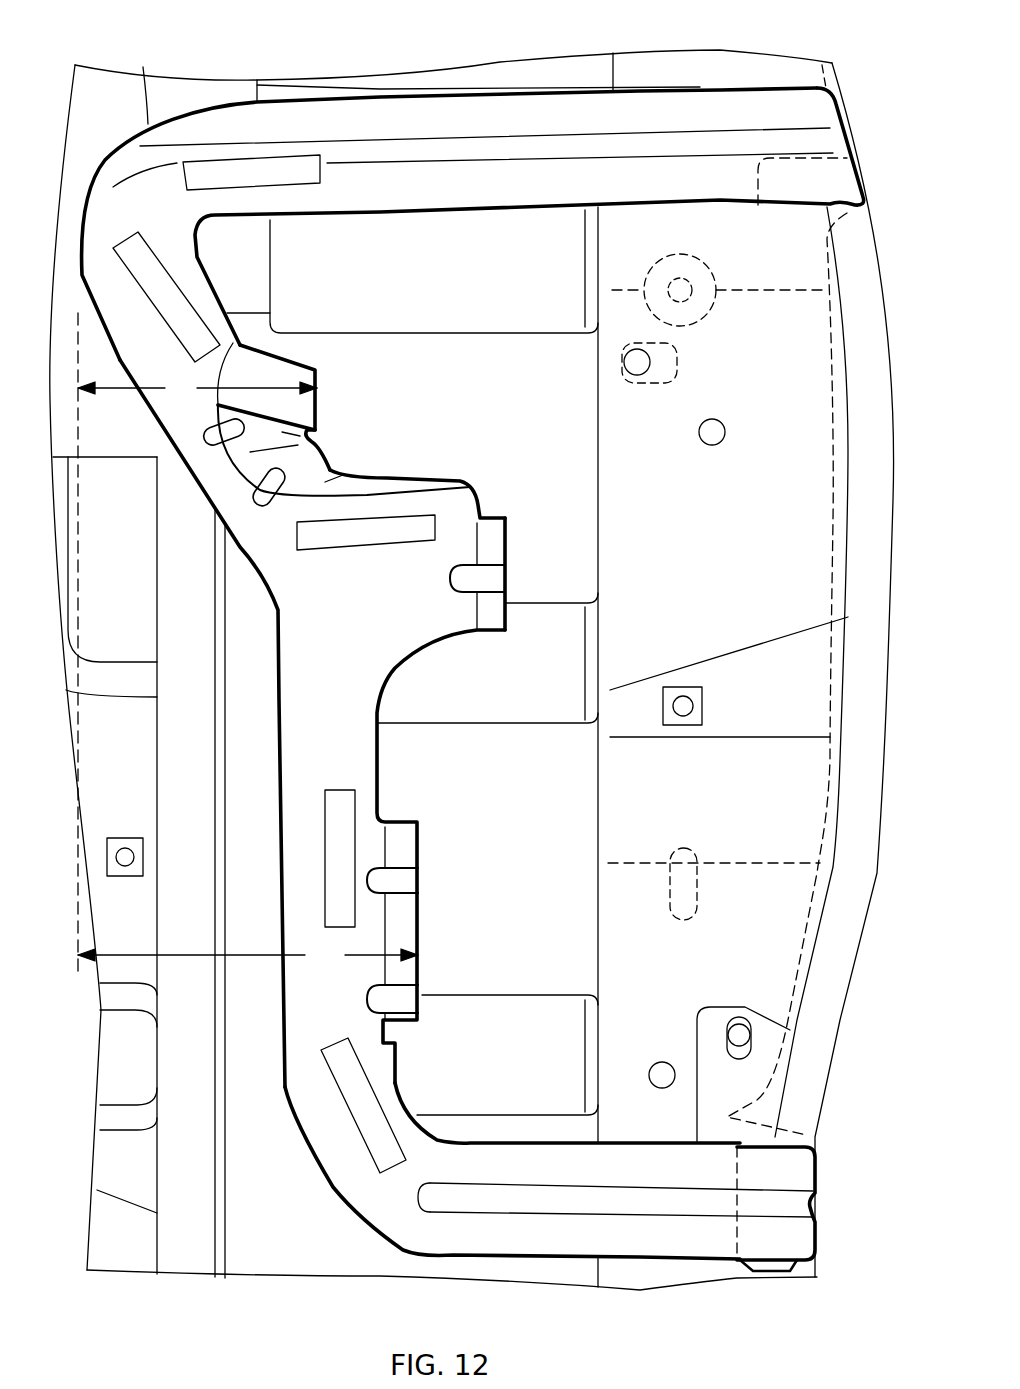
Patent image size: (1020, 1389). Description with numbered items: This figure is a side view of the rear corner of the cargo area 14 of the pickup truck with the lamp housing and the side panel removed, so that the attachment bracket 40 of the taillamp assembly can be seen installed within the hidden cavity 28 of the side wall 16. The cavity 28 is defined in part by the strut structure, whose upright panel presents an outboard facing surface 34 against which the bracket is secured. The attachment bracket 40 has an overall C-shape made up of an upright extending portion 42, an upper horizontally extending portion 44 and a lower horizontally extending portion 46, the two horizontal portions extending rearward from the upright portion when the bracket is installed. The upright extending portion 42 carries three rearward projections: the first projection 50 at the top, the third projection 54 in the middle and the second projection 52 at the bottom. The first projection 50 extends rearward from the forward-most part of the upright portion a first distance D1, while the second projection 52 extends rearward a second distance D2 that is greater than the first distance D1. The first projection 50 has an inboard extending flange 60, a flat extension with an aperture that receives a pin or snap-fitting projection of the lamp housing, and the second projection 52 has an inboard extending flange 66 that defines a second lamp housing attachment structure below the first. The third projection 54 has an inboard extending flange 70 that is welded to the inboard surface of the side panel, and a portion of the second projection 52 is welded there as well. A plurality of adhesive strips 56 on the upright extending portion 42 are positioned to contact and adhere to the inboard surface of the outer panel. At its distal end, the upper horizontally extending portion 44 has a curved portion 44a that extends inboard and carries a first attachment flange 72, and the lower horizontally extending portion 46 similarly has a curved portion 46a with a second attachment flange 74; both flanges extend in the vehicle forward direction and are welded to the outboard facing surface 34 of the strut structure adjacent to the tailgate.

The cargo area 14 is at (419, 54).
The side wall 16 is at (483, 73).
The cavity 28 is at (790, 268).
The outboard facing surface 34 is at (490, 295).
The attachment bracket 40 is at (440, 675).
The upright extending portion 42 is at (323, 612).
The upper horizontally extending portion 44 is at (543, 117).
The curved portion 44a is at (705, 115).
The lower horizontally extending portion 46 is at (549, 1206).
The curved portion 46a is at (653, 1257).
The first projection 50 is at (277, 373).
The second projection 52 is at (403, 970).
The third projection 54 is at (493, 537).
The adhesive strips 56 is at (203, 173).
The inboard extending flange 60 is at (317, 413).
The inboard extending flange 66 is at (418, 847).
The inboard extending flange 70 is at (505, 545).
The first attachment flange 72 is at (793, 178).
The second attachment flange 74 is at (763, 1237).
The first distance D1 is at (197, 390).
The second distance D2 is at (248, 958).